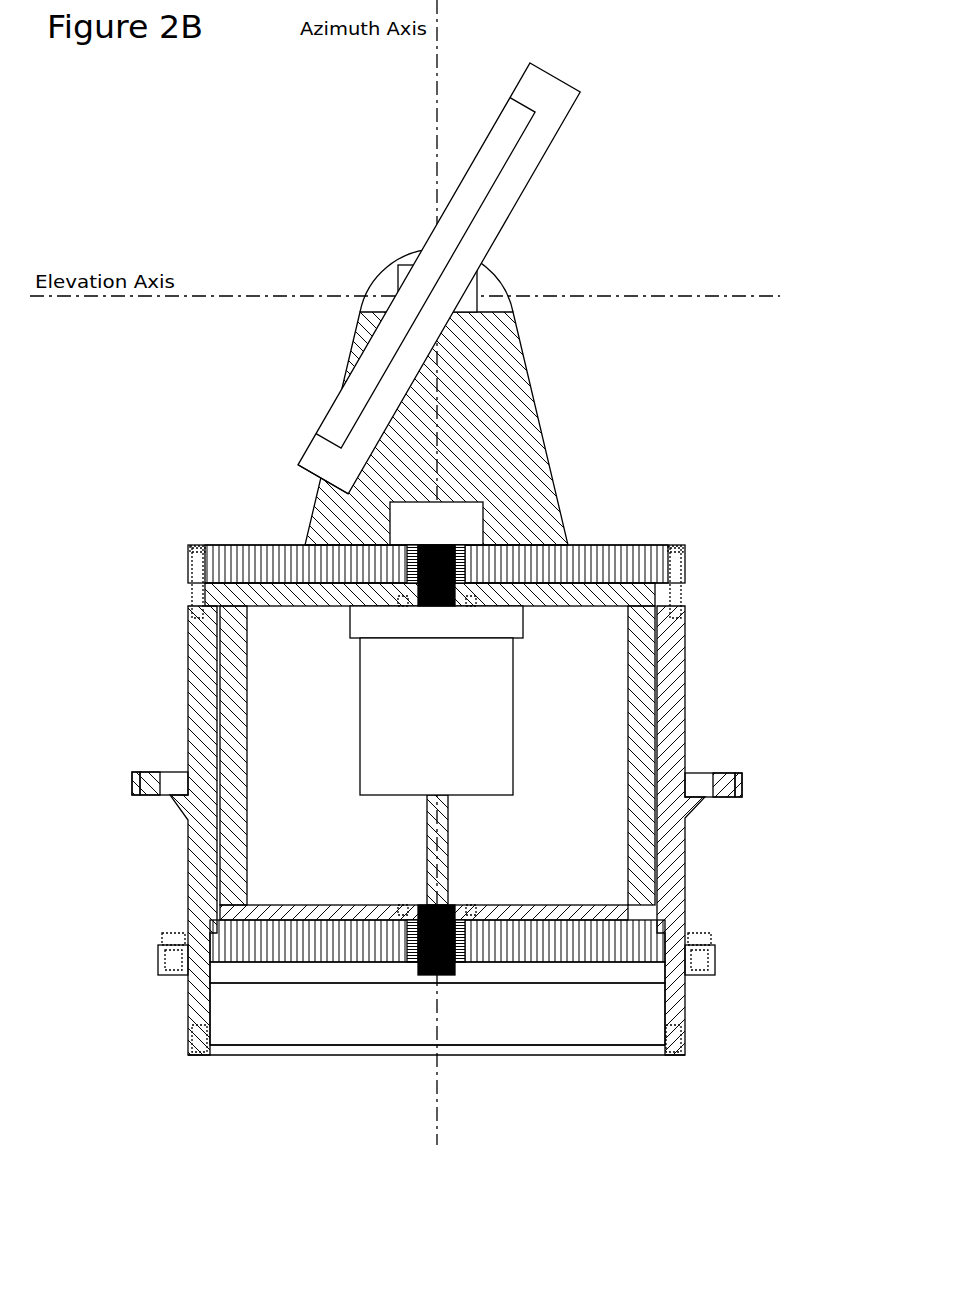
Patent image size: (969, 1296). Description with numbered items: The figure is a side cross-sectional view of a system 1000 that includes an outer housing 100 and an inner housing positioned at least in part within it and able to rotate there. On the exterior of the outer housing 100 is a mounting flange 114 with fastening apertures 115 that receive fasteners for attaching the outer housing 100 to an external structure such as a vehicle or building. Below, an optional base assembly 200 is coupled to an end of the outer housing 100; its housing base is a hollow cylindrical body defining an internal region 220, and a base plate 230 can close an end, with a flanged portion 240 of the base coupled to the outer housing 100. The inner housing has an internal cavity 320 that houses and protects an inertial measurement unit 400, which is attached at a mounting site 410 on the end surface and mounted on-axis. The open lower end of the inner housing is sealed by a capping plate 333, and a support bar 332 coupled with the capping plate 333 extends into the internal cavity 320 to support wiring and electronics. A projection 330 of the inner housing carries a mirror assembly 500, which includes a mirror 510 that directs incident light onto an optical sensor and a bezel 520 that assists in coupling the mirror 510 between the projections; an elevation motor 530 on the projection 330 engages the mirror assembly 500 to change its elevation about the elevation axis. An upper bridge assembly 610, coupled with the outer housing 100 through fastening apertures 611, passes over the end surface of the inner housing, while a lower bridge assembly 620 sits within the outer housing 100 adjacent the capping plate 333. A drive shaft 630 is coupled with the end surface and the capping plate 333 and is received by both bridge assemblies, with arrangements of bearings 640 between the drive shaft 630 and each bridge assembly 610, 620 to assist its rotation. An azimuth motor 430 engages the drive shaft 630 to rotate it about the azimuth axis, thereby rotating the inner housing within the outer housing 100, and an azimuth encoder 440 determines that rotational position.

The system 1000 is at (670, 266).
The outer housing 100 is at (205, 659).
The mounting flange 114 is at (172, 768).
The fastening apertures 115 is at (148, 795).
The base assembly 200 is at (237, 706).
The internal region 220 is at (545, 1023).
The base plate 230 is at (260, 1057).
The lower flange fastener 240 is at (198, 968).
The internal cavity 320 is at (578, 763).
The projection 330 is at (492, 392).
The support bar 332 is at (430, 830).
The capping plate 333 is at (590, 903).
The inertial measurement unit 400 is at (436, 716).
The mounting site 410 is at (436, 622).
The azimuth motor 430 is at (642, 968).
The azimuth encoder 440 is at (462, 502).
The mirror assembly 500 is at (258, 332).
The mirror 510 is at (343, 423).
The bezel 520 is at (317, 467).
The elevation motor 530 is at (387, 277).
The upper bridge assembly 610 is at (265, 560).
The fastening apertures 611 is at (198, 543).
The lower bridge assembly 620 is at (385, 947).
The drive shaft 630 is at (447, 607).
The bearings 640 is at (413, 545).